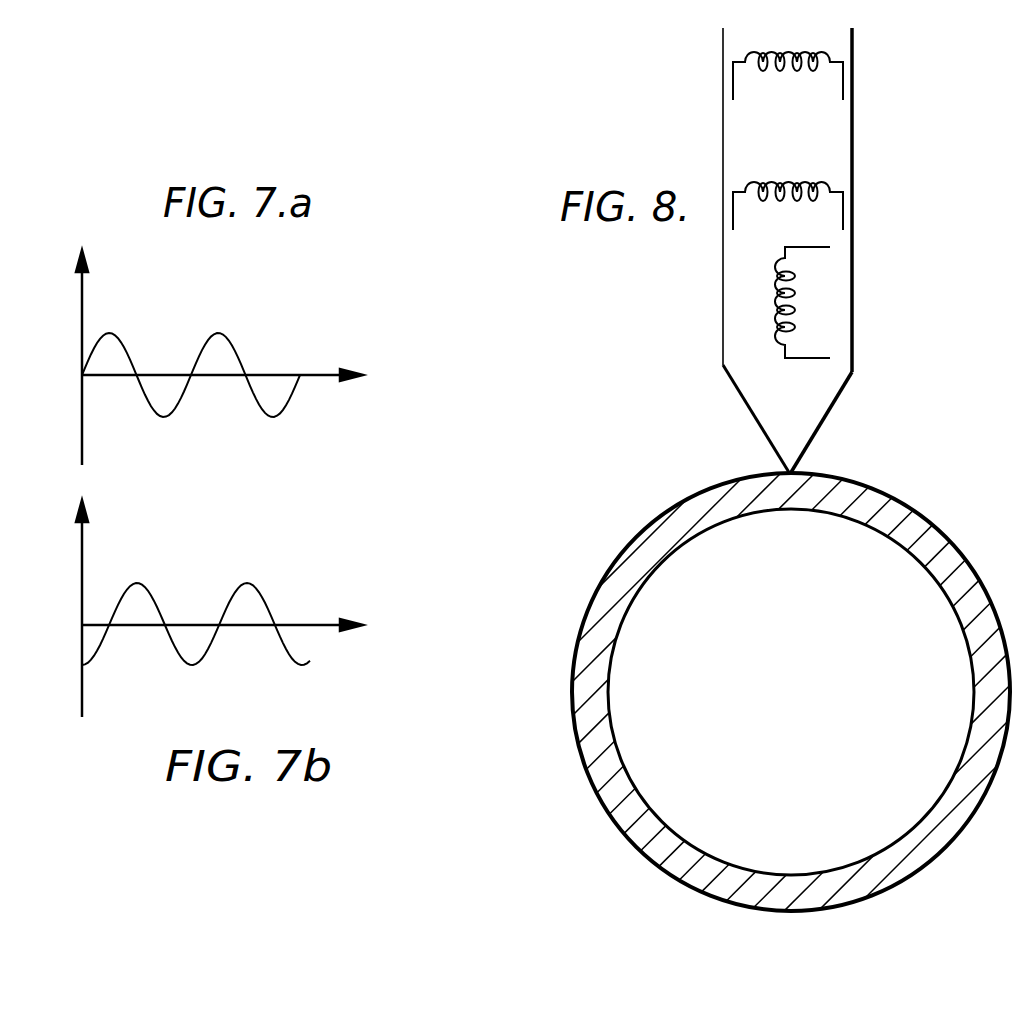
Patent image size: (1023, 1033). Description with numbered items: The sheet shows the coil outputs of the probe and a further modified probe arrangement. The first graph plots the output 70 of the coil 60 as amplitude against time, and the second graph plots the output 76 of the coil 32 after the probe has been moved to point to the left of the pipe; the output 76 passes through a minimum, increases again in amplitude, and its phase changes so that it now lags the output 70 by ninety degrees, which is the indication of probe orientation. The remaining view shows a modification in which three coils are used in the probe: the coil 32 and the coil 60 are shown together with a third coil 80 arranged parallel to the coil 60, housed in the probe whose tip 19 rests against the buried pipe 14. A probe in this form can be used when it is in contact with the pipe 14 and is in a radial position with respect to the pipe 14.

In FIG. 7a, the output 70 is at (221, 331).
In FIG. 7b, the output 76 is at (231, 587).
In FIG. 8, the third coil 80 is at (843, 81).
In FIG. 8, the coil 60 is at (843, 210).
In FIG. 8, the coil 32 is at (792, 322).
In FIG. 8, the tip 19 is at (818, 406).
In FIG. 8, the buried pipe 14 is at (858, 488).